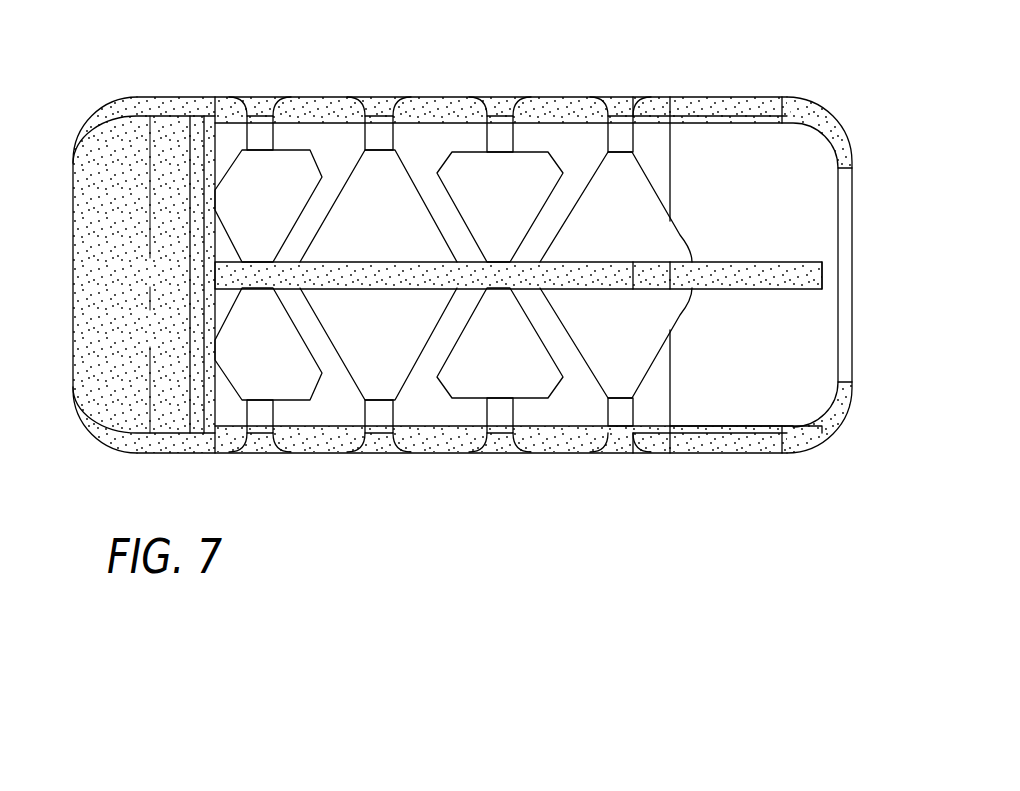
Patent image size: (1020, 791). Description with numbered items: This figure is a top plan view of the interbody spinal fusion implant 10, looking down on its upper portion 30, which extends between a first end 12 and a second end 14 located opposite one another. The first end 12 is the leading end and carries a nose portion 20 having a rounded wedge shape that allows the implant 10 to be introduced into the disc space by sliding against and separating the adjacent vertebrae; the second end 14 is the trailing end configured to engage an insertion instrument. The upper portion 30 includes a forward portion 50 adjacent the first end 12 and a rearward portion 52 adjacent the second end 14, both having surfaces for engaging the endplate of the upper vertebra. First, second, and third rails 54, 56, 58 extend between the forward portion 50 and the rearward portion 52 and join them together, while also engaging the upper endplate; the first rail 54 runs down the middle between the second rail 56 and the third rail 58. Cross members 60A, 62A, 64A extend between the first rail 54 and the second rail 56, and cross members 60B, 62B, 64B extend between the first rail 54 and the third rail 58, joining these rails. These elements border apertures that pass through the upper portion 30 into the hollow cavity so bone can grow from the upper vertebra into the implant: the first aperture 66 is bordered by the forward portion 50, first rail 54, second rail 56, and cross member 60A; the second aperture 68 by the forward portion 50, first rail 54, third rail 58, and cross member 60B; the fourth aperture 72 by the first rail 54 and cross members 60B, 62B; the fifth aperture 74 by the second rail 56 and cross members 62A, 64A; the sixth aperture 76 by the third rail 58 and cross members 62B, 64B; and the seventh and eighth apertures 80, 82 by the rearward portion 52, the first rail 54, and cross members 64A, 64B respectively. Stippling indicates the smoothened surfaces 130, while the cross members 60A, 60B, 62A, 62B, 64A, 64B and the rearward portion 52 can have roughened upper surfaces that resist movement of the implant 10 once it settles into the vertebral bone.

The implant 10 is at (173, 67).
The first end 12 is at (73, 360).
The second end 14 is at (853, 218).
The nose portion 20 is at (100, 269).
The smoothened surfaces 130 is at (105, 331).
The forward portion 50 is at (170, 407).
The rearward portion 52 is at (717, 393).
The first rail 54 is at (503, 277).
The second rail 56 is at (343, 433).
The third rail 58 is at (306, 110).
The cross member 60A is at (322, 345).
The cross member 60B is at (328, 192).
The cross member 62A is at (438, 345).
The cross member 62B is at (438, 196).
The cross member 64A is at (560, 340).
The cross member 64B is at (565, 190).
The first aperture 66 is at (262, 400).
The second aperture 68 is at (260, 147).
The fourth aperture 72 is at (402, 168).
The fifth aperture 74 is at (500, 398).
The sixth aperture 76 is at (560, 158).
The seventh aperture 80 is at (640, 386).
The eighth aperture 82 is at (650, 180).
The upper portion 30 is at (730, 135).